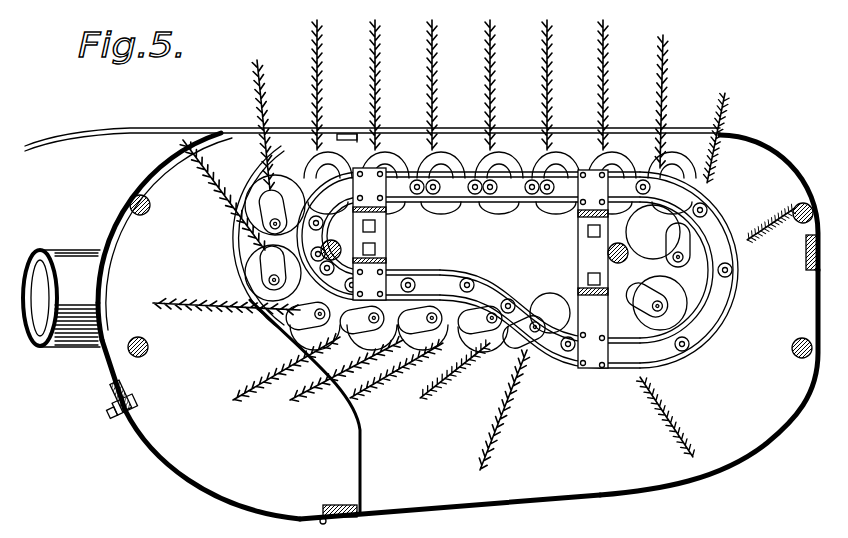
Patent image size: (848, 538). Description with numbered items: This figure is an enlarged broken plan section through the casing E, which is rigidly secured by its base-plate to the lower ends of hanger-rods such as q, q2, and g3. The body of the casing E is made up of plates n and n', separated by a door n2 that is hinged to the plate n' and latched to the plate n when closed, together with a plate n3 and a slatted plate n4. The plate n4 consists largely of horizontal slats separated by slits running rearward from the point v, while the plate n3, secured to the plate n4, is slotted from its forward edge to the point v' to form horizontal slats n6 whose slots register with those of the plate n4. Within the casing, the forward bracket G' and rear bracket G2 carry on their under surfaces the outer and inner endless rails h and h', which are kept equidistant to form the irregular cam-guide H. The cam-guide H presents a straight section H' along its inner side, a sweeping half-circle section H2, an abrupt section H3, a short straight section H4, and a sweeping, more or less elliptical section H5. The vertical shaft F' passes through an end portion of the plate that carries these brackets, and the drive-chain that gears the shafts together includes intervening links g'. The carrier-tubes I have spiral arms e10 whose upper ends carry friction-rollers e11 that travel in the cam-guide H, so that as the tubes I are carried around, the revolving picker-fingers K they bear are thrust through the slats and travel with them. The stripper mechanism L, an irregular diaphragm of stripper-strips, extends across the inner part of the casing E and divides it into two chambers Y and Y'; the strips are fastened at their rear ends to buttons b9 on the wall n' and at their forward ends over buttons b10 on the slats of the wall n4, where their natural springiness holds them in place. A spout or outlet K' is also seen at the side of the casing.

The casing E is at (421, 320).
The point v is at (769, 190).
The point v' is at (159, 218).
The plate n is at (111, 321).
The plate n' is at (450, 491).
The door n2 is at (213, 492).
The plate n3 is at (107, 188).
The plate n4 is at (360, 133).
The horizontal slats n6 is at (178, 160).
The hanger-rod q is at (150, 210).
The hanger-rod q2 is at (148, 350).
The intervening links g' is at (781, 207).
The hanger-rod g3 is at (797, 355).
The picker-fingers K is at (475, 246).
The discharge spout K' is at (61, 321).
The stripper mechanism L is at (357, 468).
The buttons b9 is at (372, 503).
The buttons b10 is at (342, 133).
The cam-guide H is at (468, 226).
The straight section H' is at (601, 153).
The sweeping section H2 is at (305, 234).
The abrupt section H3 is at (287, 300).
The short straight section H4 is at (425, 290).
The sweeping elliptical section H5 is at (655, 353).
The outer endless rail h is at (435, 294).
The inner endless rail h' is at (492, 298).
The arms e10 is at (617, 150).
The friction-rollers e11 is at (650, 177).
The rear bracket G2 is at (387, 247).
The forward bracket G' is at (576, 269).
The vertical shaft F' is at (474, 238).
The carrier-tubes I is at (667, 256).
The chamber Y is at (272, 448).
The chamber Y' is at (424, 448).